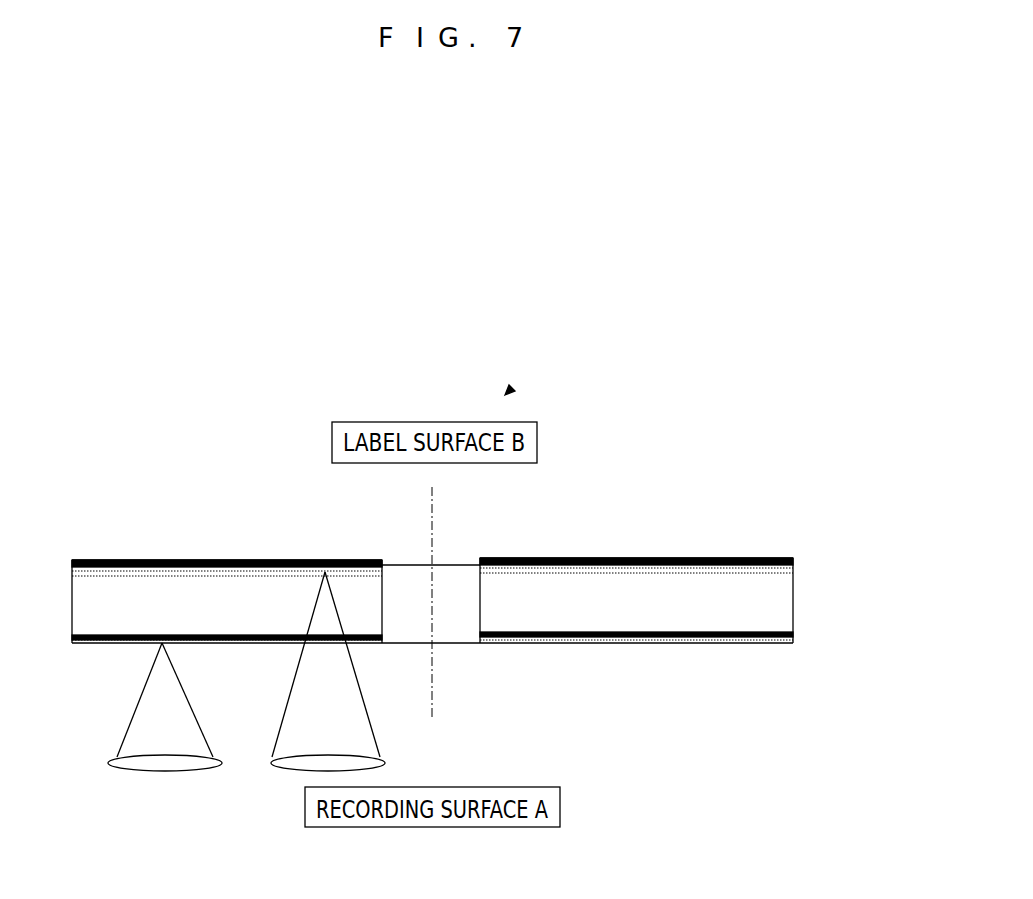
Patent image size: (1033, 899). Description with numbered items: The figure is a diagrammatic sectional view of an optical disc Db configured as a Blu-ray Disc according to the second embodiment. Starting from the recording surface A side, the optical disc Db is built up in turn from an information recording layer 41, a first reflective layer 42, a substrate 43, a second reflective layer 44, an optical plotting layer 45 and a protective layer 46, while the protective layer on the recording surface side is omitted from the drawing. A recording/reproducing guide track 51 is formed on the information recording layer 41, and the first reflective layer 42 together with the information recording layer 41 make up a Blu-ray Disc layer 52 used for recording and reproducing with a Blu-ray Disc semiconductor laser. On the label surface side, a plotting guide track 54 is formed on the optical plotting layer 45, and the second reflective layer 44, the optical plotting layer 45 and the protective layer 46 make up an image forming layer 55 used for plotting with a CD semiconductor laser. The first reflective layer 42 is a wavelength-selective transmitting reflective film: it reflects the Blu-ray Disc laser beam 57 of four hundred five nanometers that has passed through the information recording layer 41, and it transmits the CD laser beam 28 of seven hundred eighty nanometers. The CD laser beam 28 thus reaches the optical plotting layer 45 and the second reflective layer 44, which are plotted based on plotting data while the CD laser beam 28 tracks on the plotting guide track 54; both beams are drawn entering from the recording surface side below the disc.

The optical disc Db is at (512, 387).
The CD laser beam 28 is at (293, 690).
The information recording layer 41 is at (793, 640).
The first reflective layer 42 is at (793, 636).
The substrate 43 is at (780, 603).
The second reflective layer 44 is at (762, 491).
The optical plotting layer 45 is at (793, 563).
The protective layer 46 is at (760, 557).
The recording/reproducing guide track 51 is at (622, 645).
The Blu-ray Disc layer 52 is at (490, 643).
The plotting guide track 54 is at (619, 558).
The image forming layer 55 is at (471, 513).
The Blu-ray Disc laser beam 57 is at (137, 705).